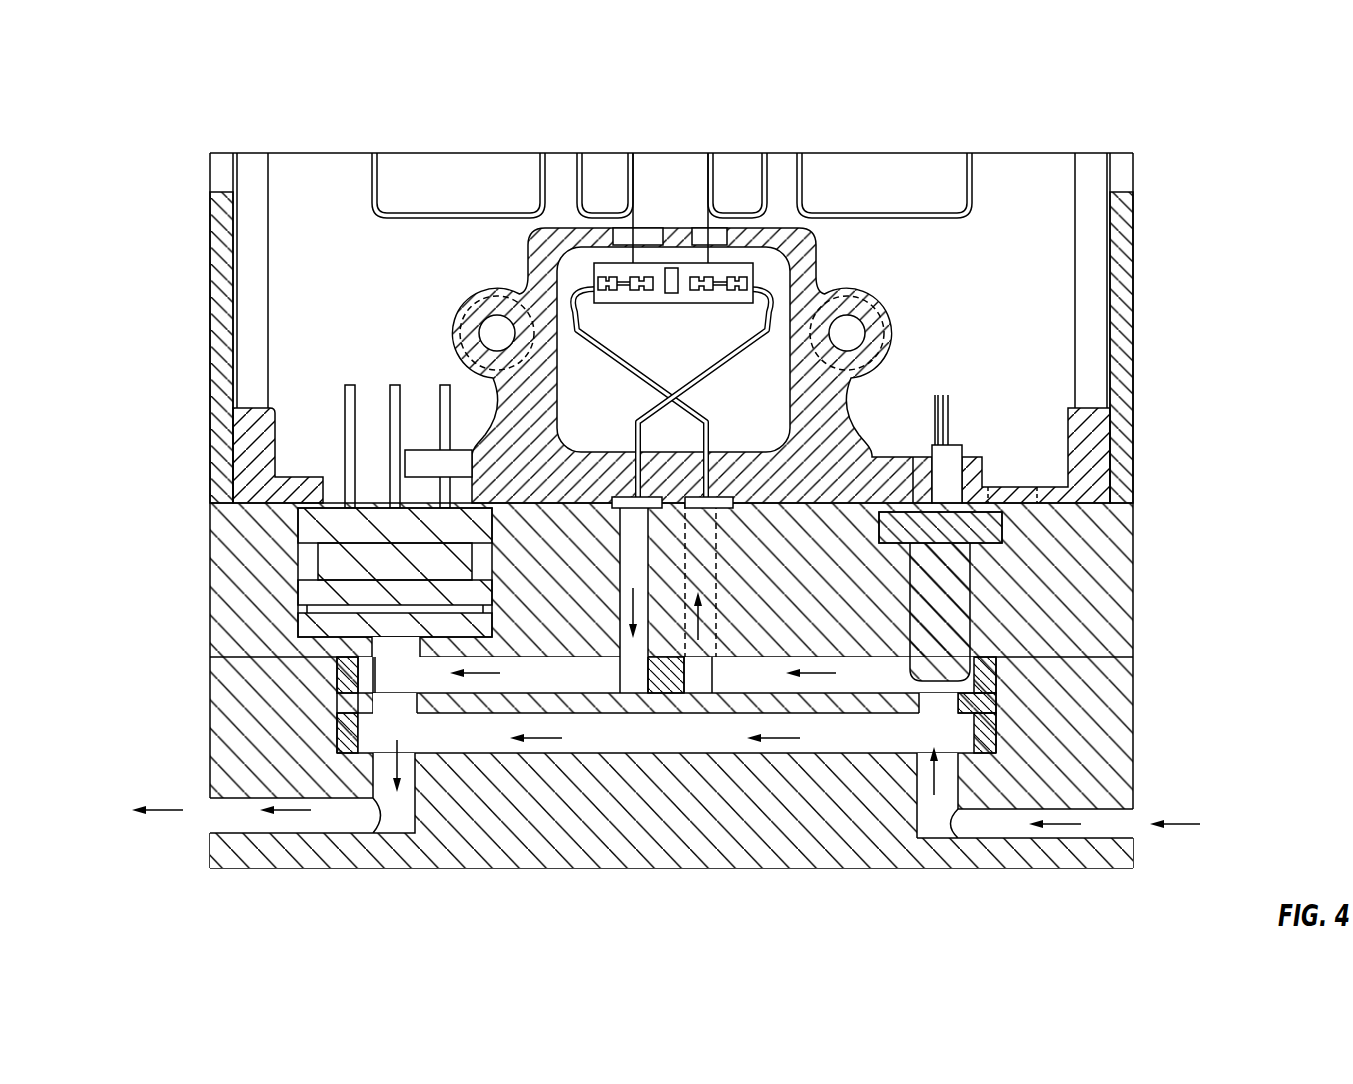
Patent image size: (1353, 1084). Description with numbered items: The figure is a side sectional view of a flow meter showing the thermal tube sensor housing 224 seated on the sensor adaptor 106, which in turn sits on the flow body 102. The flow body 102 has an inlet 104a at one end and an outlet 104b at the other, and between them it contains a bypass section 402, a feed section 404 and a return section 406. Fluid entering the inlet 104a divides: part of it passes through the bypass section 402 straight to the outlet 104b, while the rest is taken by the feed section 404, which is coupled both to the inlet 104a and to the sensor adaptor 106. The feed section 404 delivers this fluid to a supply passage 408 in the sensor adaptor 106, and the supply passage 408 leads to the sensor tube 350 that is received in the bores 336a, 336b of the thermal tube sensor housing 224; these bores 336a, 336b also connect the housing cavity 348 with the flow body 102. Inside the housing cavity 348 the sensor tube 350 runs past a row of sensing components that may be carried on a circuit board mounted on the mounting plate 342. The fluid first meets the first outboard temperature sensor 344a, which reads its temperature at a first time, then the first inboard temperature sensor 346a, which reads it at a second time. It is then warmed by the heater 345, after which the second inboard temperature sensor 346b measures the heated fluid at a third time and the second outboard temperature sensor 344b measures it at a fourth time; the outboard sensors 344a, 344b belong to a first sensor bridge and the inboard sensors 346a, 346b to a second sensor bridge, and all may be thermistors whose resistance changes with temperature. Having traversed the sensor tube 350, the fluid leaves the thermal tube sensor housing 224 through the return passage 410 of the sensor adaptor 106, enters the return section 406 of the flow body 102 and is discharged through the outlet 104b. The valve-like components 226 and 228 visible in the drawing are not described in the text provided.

The flow body 102 is at (130, 662).
The inlet 104a is at (1091, 830).
The outlet 104b is at (225, 823).
The sensor adaptor 106 is at (1137, 620).
The thermal tube sensor housing 224 is at (1200, 338).
The first valve 226 is at (1040, 595).
The second valve 228 is at (527, 569).
The bore 336a is at (728, 493).
The bore 336b is at (615, 497).
The mounting plate 342 is at (680, 170).
The first outboard temperature sensor 344a is at (747, 274).
The second outboard temperature sensor 344b is at (603, 275).
The heater 345 is at (673, 268).
The first inboard temperature sensor 346a is at (695, 291).
The second inboard temperature sensor 346b is at (647, 291).
The housing cavity 348 is at (610, 417).
The sensor tube 350 is at (733, 352).
The bypass section 402 is at (841, 742).
The feed section 404 is at (862, 669).
The return section 406 is at (570, 667).
The supply passage 408 is at (719, 574).
The return passage 410 is at (617, 600).